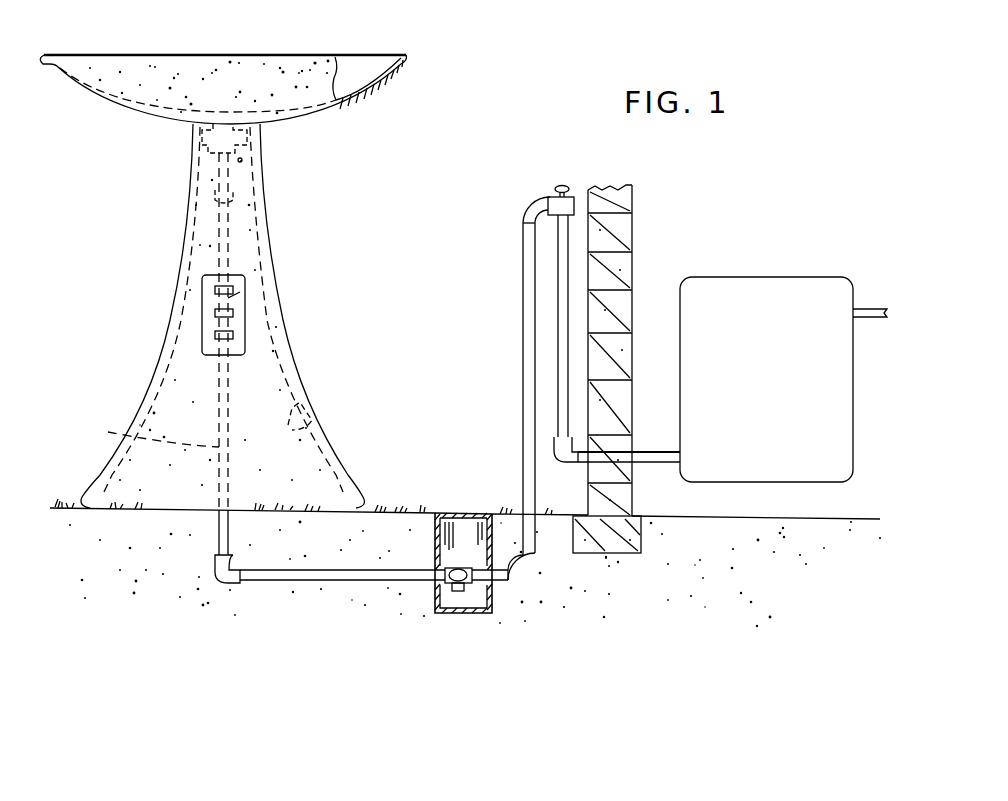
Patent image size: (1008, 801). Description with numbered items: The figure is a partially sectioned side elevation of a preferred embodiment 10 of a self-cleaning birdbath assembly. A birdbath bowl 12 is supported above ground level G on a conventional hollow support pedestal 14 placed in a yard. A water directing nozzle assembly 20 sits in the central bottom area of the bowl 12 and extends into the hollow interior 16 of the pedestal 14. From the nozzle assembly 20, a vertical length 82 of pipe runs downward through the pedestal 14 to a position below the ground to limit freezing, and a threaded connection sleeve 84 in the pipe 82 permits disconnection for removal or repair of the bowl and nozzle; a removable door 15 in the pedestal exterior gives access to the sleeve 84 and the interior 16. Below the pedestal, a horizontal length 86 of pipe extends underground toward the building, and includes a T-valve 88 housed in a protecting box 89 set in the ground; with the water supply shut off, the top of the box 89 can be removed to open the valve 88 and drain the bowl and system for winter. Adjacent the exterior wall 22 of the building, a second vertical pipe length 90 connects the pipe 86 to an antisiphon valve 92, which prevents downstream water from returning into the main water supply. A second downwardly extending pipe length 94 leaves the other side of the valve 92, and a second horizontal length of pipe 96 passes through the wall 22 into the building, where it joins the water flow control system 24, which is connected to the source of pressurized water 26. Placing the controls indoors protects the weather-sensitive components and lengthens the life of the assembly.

The self-cleaning birdbath assembly 10 is at (418, 131).
The birdbath bowl 12 is at (318, 56).
The hollow support pedestal 14 is at (333, 448).
The removable door 15 is at (202, 295).
The hollow interior of pedestal 16 is at (306, 432).
The water directing nozzle assembly 20 is at (242, 151).
The exterior wall 22 is at (636, 245).
The water flow control system 24 is at (740, 263).
The source of pressurized water 26 is at (861, 318).
The vertical length of pipe 82 is at (118, 431).
The threaded connection sleeve 84 is at (245, 294).
The horizontal length of pipe 86 is at (362, 583).
The T-valve 88 is at (447, 592).
The protecting container or box 89 is at (455, 513).
The second vertical pipe length 90 is at (523, 366).
The antisiphon valve 92 is at (532, 205).
The second downwardly extending pipe length 94 is at (558, 286).
The second horizontal length of pipe 96 is at (668, 462).
The ground level G is at (378, 507).